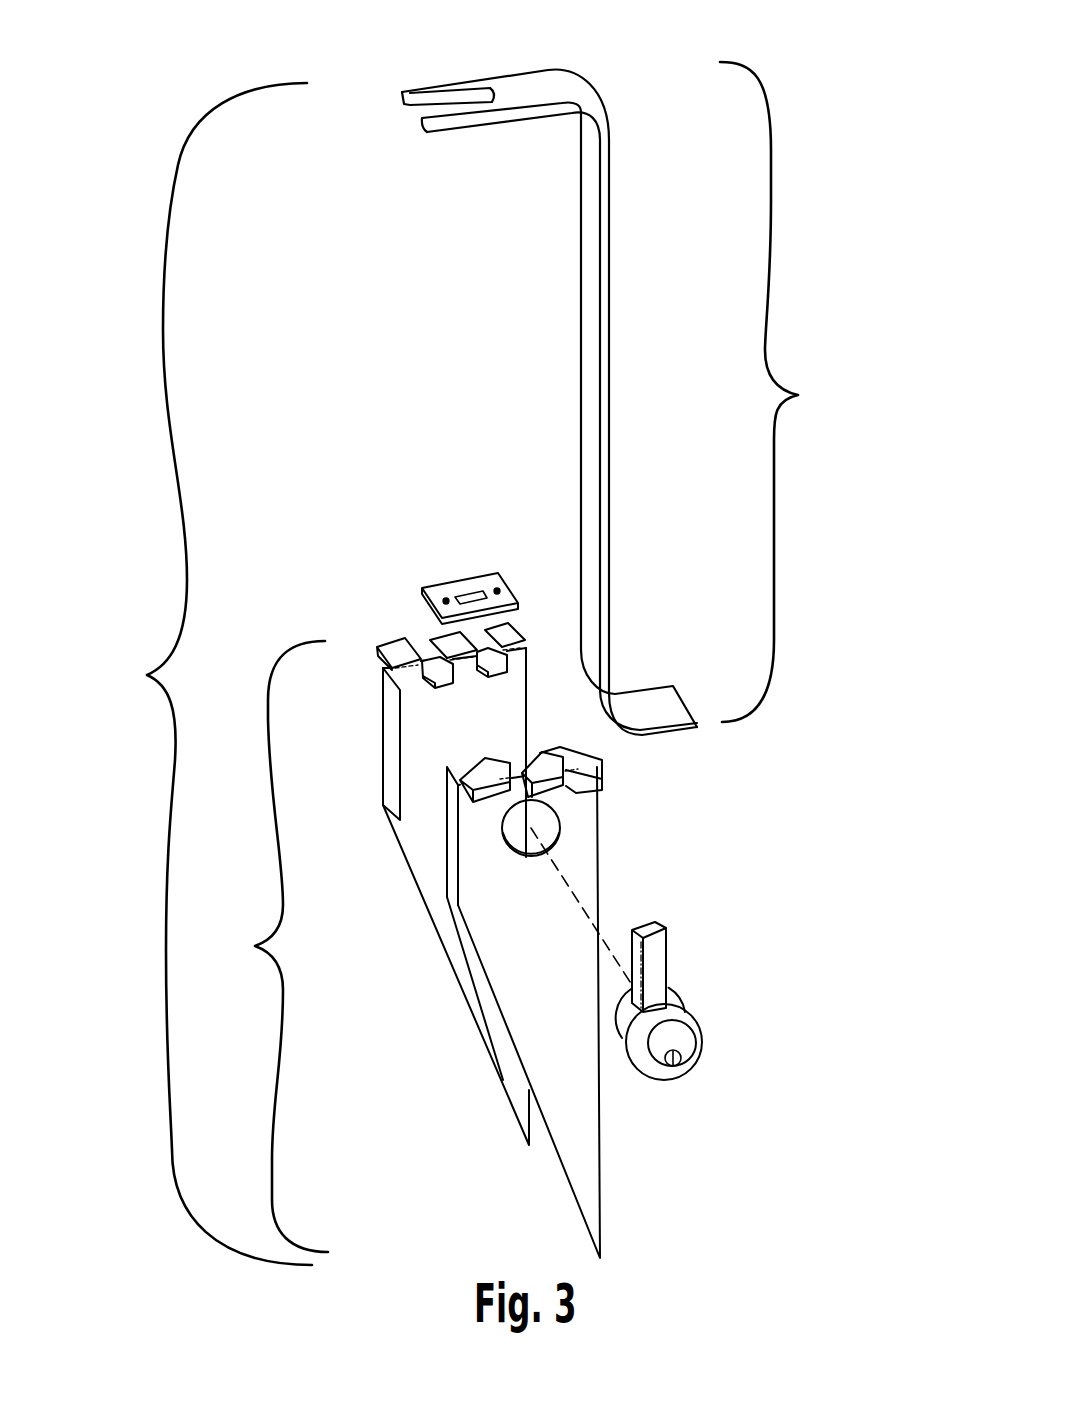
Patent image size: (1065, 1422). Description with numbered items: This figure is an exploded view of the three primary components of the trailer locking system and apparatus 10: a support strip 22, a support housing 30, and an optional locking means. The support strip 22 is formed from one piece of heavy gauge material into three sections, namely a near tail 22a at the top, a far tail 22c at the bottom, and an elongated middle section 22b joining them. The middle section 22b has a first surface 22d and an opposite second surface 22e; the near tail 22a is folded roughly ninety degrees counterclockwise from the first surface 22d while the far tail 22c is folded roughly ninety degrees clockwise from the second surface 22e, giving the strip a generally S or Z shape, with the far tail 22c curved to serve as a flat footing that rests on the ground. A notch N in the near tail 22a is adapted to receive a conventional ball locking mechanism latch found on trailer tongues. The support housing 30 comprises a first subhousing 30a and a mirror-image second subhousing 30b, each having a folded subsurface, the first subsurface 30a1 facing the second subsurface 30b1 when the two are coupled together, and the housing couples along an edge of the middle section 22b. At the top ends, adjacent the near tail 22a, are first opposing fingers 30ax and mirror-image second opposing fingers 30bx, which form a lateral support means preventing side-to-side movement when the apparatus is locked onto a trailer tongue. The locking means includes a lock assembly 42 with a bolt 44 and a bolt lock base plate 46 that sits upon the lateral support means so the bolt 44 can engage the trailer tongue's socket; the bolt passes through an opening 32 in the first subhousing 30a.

The trailer locking system and apparatus 10 is at (211, 674).
The support strip 22 is at (567, 373).
The near tail 22a is at (495, 69).
The elongated middle section 22b is at (557, 384).
The far tail 22c is at (651, 677).
The first surface 22d is at (590, 235).
The second surface 22e is at (623, 197).
The notch N is at (403, 117).
The support housing 30 is at (490, 911).
The first subhousing 30a is at (562, 1002).
The folded first subsurface 30a1 is at (444, 882).
The first opposing fingers 30ax is at (595, 768).
The second subhousing 30b is at (402, 855).
The folded second subsurface 30b1 is at (384, 772).
The second opposing fingers 30bx is at (397, 653).
The lock aperture 32 is at (548, 822).
The lock assembly 42 is at (700, 1025).
The bolt 44 is at (653, 958).
The bolt lock base plate 46 is at (446, 585).